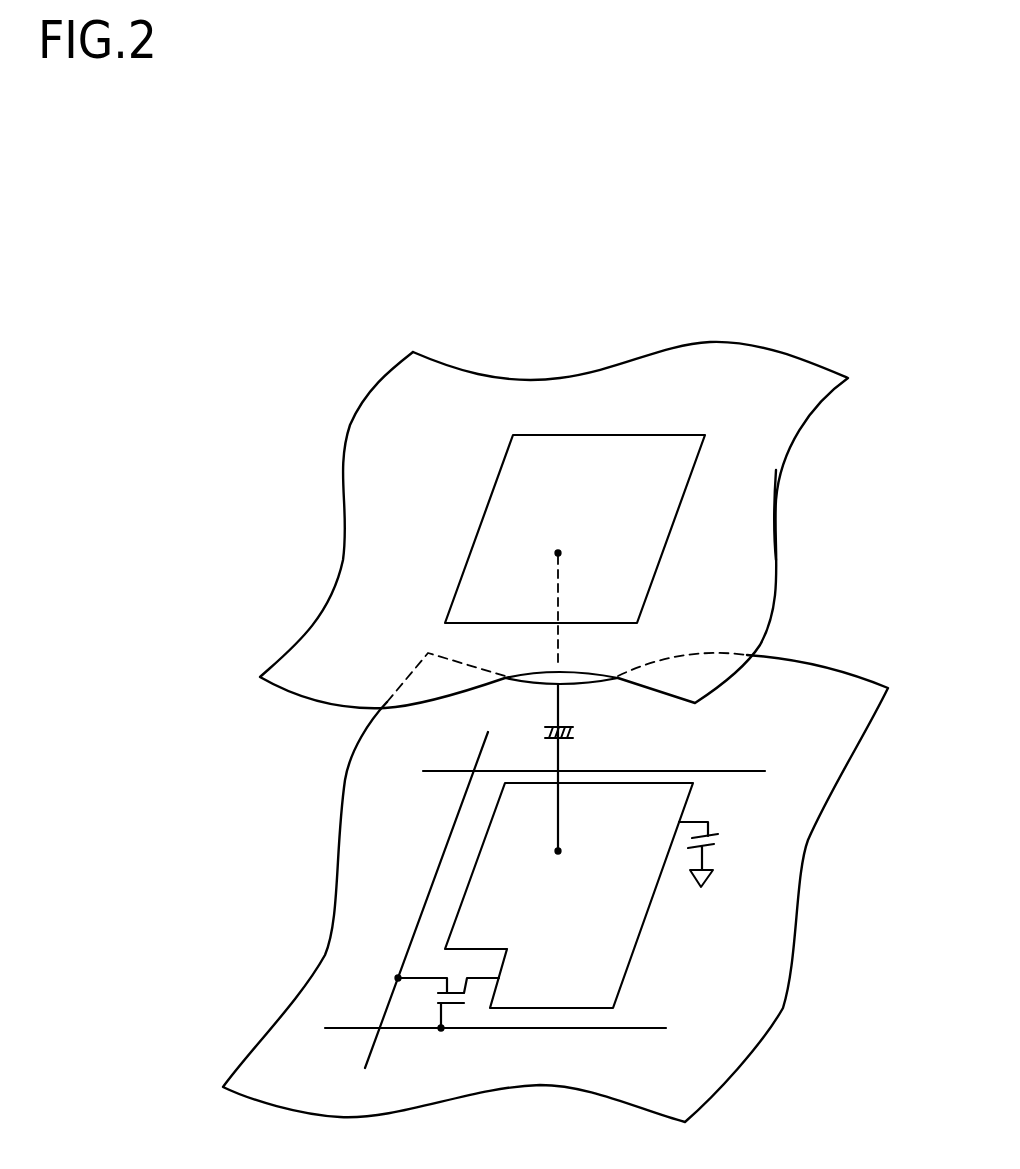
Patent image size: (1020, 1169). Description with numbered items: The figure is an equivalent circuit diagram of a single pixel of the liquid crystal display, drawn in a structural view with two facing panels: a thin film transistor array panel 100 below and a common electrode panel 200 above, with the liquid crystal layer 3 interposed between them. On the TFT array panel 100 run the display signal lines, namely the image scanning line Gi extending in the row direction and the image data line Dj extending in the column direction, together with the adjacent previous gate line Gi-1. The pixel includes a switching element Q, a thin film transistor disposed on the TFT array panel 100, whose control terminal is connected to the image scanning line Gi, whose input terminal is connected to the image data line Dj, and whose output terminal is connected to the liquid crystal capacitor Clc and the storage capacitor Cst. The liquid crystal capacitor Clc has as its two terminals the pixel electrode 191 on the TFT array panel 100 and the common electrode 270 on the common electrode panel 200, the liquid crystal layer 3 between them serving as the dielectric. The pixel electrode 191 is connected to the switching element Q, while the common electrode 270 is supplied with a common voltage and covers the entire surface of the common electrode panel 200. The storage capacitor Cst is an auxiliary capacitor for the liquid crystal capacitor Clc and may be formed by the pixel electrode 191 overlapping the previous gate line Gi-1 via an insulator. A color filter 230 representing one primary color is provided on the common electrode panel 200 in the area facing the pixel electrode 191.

The liquid crystal layer 3 is at (258, 784).
The thin film transistor array panel 100 is at (804, 866).
The pixel electrode 191 is at (633, 947).
The common electrode panel 200 is at (783, 552).
The color filter 230 is at (667, 543).
The common electrode 270 is at (774, 498).
The liquid crystal capacitor Clc is at (580, 702).
The storage capacitor Cst is at (717, 854).
The switching element Q is at (447, 1003).
The image data line Dj is at (426, 899).
The image scanning line Gi is at (494, 1010).
The previous gate line Gi-1 is at (579, 788).